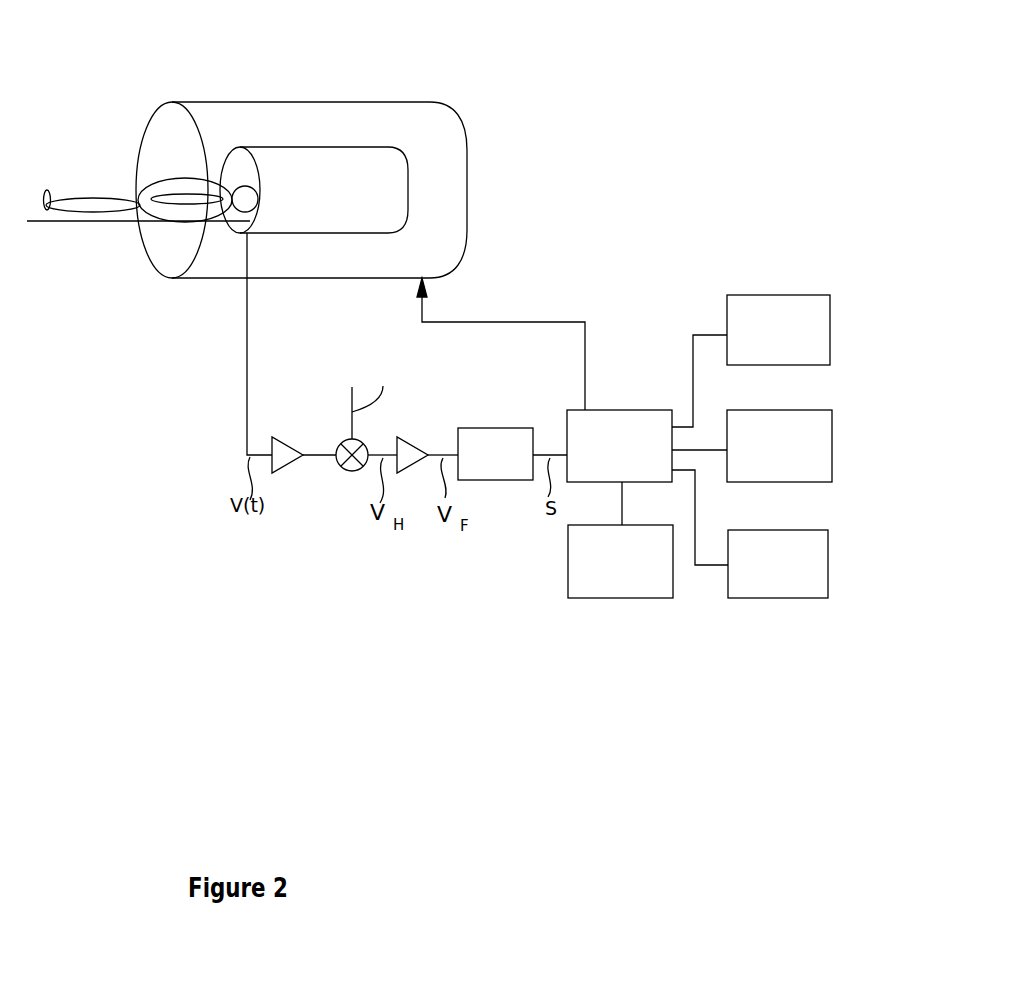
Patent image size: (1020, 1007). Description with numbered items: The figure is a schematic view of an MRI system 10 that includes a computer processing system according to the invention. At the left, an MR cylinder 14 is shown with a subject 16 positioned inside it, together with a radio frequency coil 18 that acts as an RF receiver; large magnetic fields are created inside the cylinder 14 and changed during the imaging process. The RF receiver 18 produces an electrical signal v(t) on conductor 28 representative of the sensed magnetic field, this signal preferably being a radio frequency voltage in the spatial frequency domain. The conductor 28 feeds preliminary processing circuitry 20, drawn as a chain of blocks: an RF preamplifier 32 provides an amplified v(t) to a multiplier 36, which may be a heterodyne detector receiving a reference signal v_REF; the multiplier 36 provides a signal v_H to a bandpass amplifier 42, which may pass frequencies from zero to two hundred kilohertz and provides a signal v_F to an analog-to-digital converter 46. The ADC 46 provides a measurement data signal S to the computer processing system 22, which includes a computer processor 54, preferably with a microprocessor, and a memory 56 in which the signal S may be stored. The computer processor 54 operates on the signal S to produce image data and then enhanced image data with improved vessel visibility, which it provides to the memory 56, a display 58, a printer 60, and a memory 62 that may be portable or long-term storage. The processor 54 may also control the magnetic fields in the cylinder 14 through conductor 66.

The MRI system 10 is at (564, 87).
The MR cylinder 14 is at (343, 101).
The subject 16 is at (100, 195).
The radio frequency coil 18 is at (362, 147).
The preliminary processing circuitry 20 is at (369, 540).
The computer processing system 22 is at (546, 540).
The conductor 28 is at (247, 378).
The RF preamplifier 32 is at (292, 458).
The multiplier 36 is at (352, 471).
The bandpass amplifier 42 is at (408, 458).
The analog-to-digital converter 46 is at (488, 480).
The computer processor 54 is at (640, 410).
The memory 56 is at (630, 598).
The display 58 is at (832, 443).
The printer 60 is at (829, 565).
The memory 62 is at (831, 325).
The conductor 66 is at (568, 322).